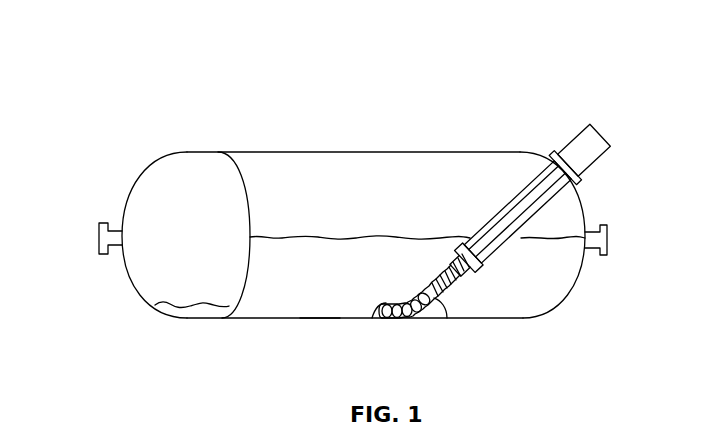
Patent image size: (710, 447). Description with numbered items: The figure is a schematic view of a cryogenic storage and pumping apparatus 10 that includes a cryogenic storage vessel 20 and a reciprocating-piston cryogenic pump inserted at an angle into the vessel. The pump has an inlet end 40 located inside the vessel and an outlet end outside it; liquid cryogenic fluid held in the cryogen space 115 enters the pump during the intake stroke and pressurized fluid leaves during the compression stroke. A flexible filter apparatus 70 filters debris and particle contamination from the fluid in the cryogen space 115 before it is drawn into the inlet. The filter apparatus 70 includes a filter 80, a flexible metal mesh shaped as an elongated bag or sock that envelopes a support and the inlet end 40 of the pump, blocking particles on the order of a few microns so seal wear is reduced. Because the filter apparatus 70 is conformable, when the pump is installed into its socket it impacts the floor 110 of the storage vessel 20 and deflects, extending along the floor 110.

The cryogenic storage and pumping apparatus 10 is at (159, 113).
The cryogenic storage vessel 20 is at (273, 151).
The inlet end 40 is at (443, 320).
The flexible filter apparatus 70 is at (385, 300).
The filter 80 is at (375, 316).
The floor 110 is at (318, 320).
The cryogen space 115 is at (320, 283).